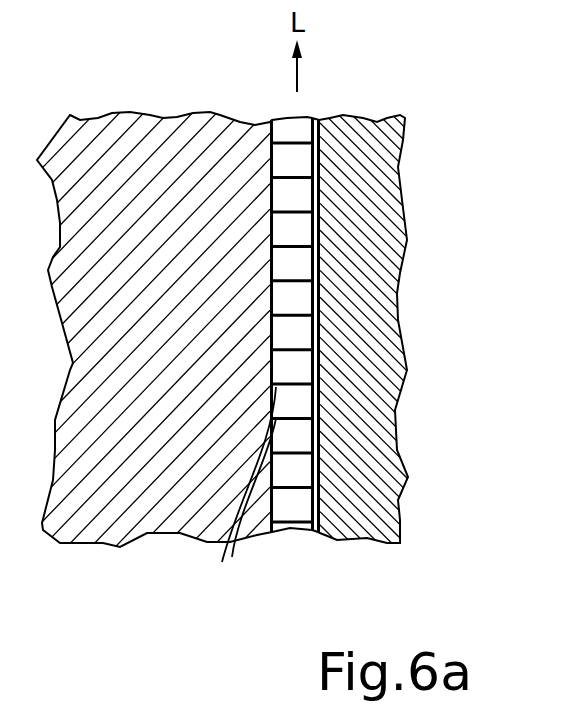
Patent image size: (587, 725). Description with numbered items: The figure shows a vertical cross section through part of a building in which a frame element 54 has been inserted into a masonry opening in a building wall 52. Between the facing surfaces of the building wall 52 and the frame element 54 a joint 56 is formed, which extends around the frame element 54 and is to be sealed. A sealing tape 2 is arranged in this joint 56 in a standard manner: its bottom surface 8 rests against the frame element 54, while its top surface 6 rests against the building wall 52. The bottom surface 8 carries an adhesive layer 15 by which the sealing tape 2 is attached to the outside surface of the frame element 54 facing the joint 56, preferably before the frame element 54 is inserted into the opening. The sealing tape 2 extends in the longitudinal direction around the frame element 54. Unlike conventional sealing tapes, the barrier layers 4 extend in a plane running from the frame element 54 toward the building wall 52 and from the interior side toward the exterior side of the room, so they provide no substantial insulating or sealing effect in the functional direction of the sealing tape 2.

The sealing tape 2 is at (292, 128).
The barrier layers 4 is at (244, 493).
The top surface 6 is at (268, 197).
The bottom surface 8 is at (316, 400).
The adhesive layer 15 is at (318, 282).
The building wall 52 is at (115, 135).
The frame element 54 is at (355, 140).
The joint 56 is at (293, 547).